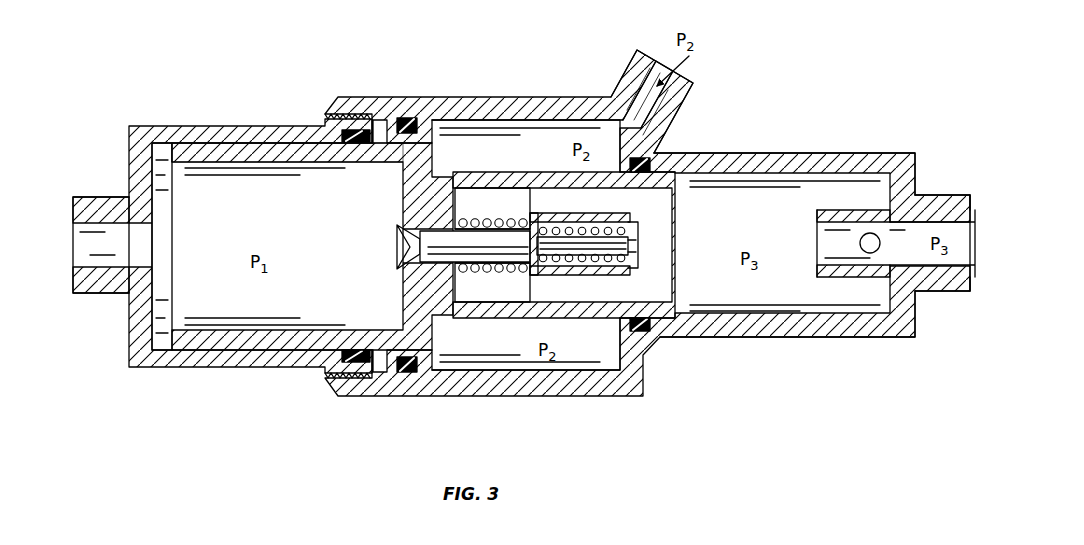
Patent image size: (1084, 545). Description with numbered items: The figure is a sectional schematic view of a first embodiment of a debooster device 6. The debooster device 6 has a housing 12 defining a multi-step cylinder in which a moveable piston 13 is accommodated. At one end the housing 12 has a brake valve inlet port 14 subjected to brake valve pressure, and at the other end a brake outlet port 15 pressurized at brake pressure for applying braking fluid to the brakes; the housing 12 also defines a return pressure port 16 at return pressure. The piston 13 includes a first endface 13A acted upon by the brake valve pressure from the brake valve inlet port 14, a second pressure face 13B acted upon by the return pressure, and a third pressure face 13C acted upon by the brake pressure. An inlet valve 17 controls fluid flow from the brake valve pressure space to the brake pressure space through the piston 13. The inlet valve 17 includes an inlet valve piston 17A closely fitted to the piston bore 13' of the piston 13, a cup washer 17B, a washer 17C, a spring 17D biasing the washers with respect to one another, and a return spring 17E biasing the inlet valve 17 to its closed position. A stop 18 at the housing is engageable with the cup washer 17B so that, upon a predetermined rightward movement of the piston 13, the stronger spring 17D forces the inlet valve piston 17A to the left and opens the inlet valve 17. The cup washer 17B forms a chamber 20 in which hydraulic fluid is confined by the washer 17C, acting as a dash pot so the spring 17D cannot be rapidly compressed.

The debooster device 6 is at (772, 130).
The housing 12 is at (448, 97).
The piston 13 is at (324, 246).
The first endface 13A is at (160, 165).
The second pressure face 13B is at (434, 352).
The third pressure face 13C is at (458, 205).
The piston bore 13' is at (440, 247).
The brake valve inlet port 14 is at (103, 240).
The brake outlet port 15 is at (947, 228).
The return pressure port 16 is at (689, 86).
The inlet valve 17 is at (634, 196).
The inlet valve piston 17A is at (510, 250).
The cup washer 17B is at (630, 222).
The washer 17C is at (538, 213).
The spring 17D is at (582, 272).
The return spring 17E is at (497, 266).
The stop 18 is at (818, 218).
The chamber 20 is at (574, 224).